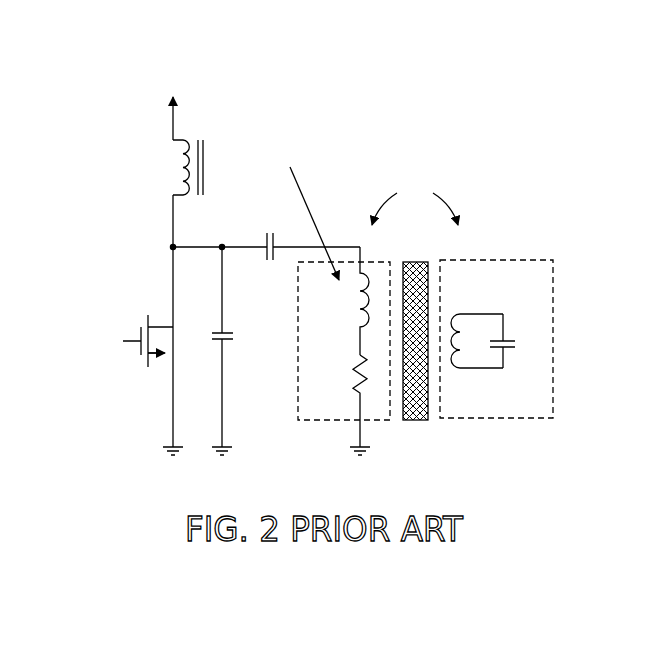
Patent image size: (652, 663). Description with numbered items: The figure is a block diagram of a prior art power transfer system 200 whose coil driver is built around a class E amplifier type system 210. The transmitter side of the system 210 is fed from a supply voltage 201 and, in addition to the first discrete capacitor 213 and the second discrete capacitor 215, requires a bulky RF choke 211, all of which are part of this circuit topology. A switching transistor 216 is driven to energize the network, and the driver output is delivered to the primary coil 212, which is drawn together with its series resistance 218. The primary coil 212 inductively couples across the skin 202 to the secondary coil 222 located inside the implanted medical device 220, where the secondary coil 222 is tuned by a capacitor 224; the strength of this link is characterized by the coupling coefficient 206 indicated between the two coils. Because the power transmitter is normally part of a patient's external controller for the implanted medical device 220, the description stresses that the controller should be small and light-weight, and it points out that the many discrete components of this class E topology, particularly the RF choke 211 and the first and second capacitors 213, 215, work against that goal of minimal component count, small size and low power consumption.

The prior art inductive power transfer system 200 is at (549, 125).
The supply voltage VLP 201 is at (193, 60).
The skin 202 is at (438, 440).
The coupling coefficient KC 206 is at (480, 163).
The class E amplifier type system 210 is at (130, 98).
The RF choke LC 211 is at (152, 180).
The primary coil LP 212 is at (330, 117).
The capacitor CT1 213 is at (267, 355).
The capacitor CT2 215 is at (278, 205).
The switching transistor MS 216 is at (107, 380).
The resistor RP 218 is at (317, 373).
The implanted medical device 220 is at (520, 270).
The secondary coil LS 222 is at (472, 395).
The capacitor CS 224 is at (537, 368).